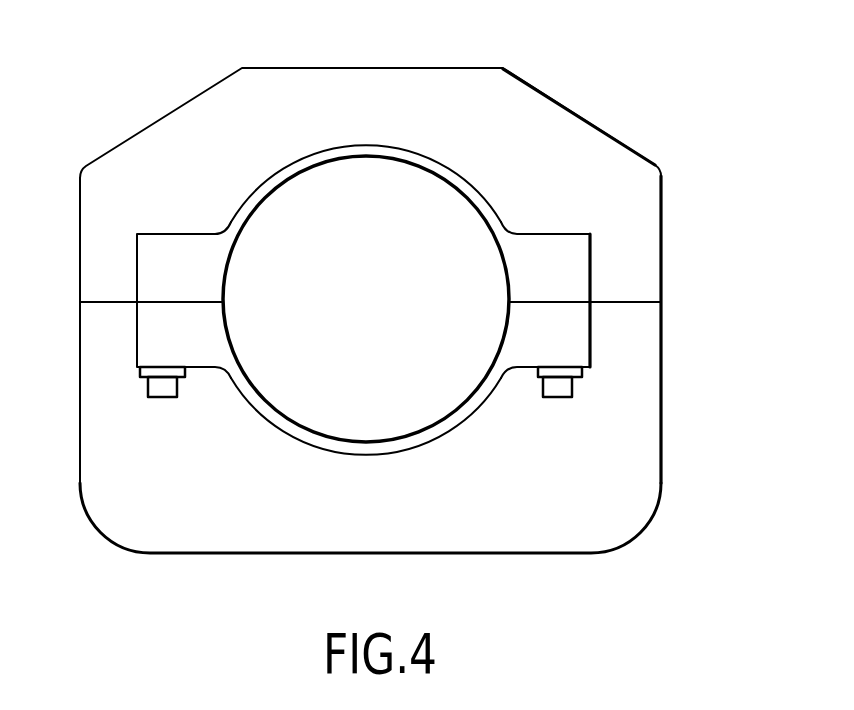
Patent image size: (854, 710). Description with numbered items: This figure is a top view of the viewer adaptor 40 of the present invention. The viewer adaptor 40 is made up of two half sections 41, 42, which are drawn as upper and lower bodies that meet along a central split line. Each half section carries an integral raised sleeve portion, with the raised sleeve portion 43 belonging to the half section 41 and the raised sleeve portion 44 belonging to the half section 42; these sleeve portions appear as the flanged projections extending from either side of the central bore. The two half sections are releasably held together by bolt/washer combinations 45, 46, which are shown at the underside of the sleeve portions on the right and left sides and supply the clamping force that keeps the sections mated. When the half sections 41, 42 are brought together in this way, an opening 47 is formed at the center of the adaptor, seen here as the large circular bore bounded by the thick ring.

The viewer adaptor 40 is at (648, 110).
The half section 41 is at (207, 118).
The half section 42 is at (197, 535).
The integral raised sleeve portion 43 is at (570, 267).
The integral raised sleeve portion 44 is at (575, 345).
The bolt/washer combination 45 is at (573, 398).
The bolt/washer combination 46 is at (157, 397).
The opening 47 is at (388, 317).